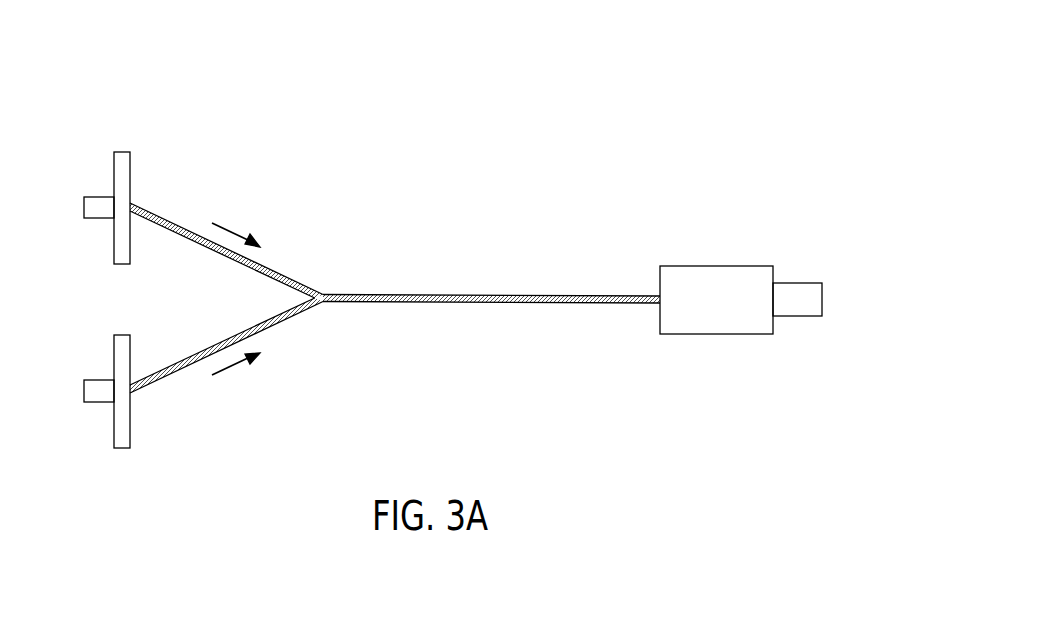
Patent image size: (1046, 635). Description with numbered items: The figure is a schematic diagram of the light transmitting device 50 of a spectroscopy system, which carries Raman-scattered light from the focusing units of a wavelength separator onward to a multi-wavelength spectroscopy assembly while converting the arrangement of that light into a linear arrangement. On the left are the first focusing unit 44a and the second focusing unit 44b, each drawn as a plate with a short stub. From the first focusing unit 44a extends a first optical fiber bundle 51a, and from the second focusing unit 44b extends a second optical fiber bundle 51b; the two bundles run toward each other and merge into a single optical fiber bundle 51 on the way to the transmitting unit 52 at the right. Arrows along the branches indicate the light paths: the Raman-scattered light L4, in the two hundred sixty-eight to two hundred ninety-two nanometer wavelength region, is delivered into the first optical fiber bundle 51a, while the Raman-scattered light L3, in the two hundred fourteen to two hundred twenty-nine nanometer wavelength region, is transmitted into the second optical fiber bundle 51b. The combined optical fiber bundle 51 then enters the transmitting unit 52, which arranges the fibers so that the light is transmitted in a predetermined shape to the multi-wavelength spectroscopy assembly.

The light transmitting device 50 is at (657, 86).
The first focusing unit 44a is at (113, 236).
The second focusing unit 44b is at (113, 426).
The first optical fiber bundle 51a is at (180, 226).
The second optical fiber bundle 51b is at (182, 369).
The optical fiber bundle 51 is at (500, 296).
The transmitting unit 52 is at (717, 266).
The Raman-scattered light L4 is at (236, 222).
The Raman-scattered light L3 is at (236, 378).